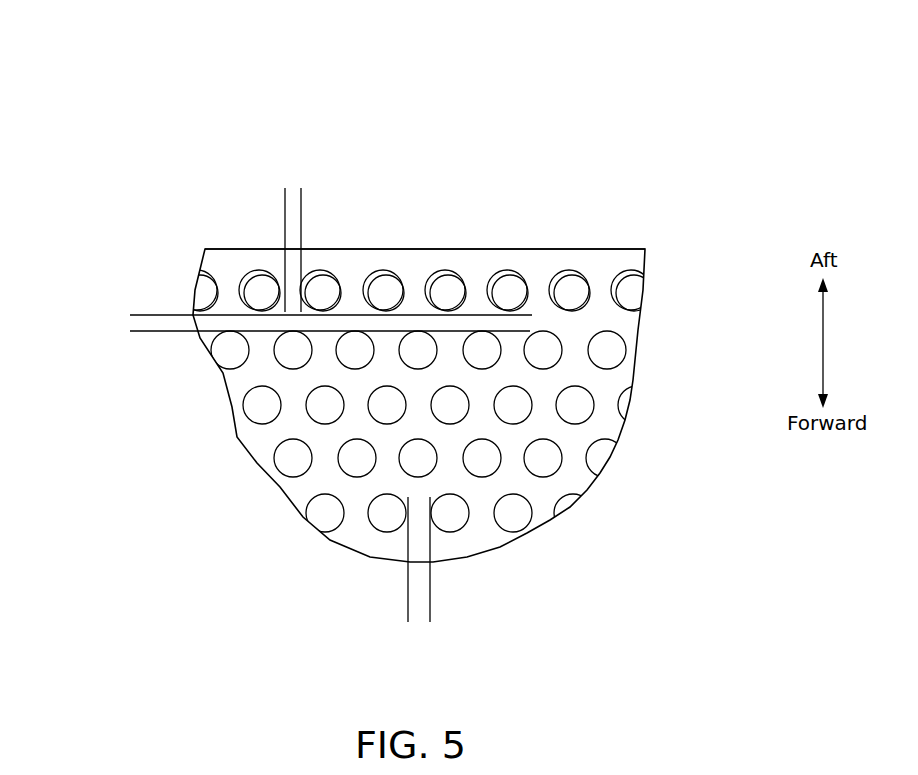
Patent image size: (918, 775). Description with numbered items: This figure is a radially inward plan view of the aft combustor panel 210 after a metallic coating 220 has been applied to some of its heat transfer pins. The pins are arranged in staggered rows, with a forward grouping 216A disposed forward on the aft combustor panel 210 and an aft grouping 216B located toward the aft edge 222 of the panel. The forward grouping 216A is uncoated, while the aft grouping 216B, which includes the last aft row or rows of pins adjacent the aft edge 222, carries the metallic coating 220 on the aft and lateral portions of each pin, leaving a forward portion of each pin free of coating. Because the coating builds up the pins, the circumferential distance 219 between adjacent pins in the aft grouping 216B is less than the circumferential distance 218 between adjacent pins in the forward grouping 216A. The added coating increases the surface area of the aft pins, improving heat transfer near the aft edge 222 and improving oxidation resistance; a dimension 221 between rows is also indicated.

The aft combustor panel 210 is at (116, 92).
The forward grouping of the heat transfer pins 216A is at (643, 408).
The aft grouping of the heat transfer pins 216B is at (662, 296).
The circumferential distance between adjacent heat transfer pins in the forward grou 218 is at (466, 612).
The circumferential distance between adjacent heat transfer pins in the aft grouping 219 is at (245, 198).
The metallic coating 220 is at (527, 283).
The row offset 221 is at (150, 278).
The aft edge 222 is at (582, 248).